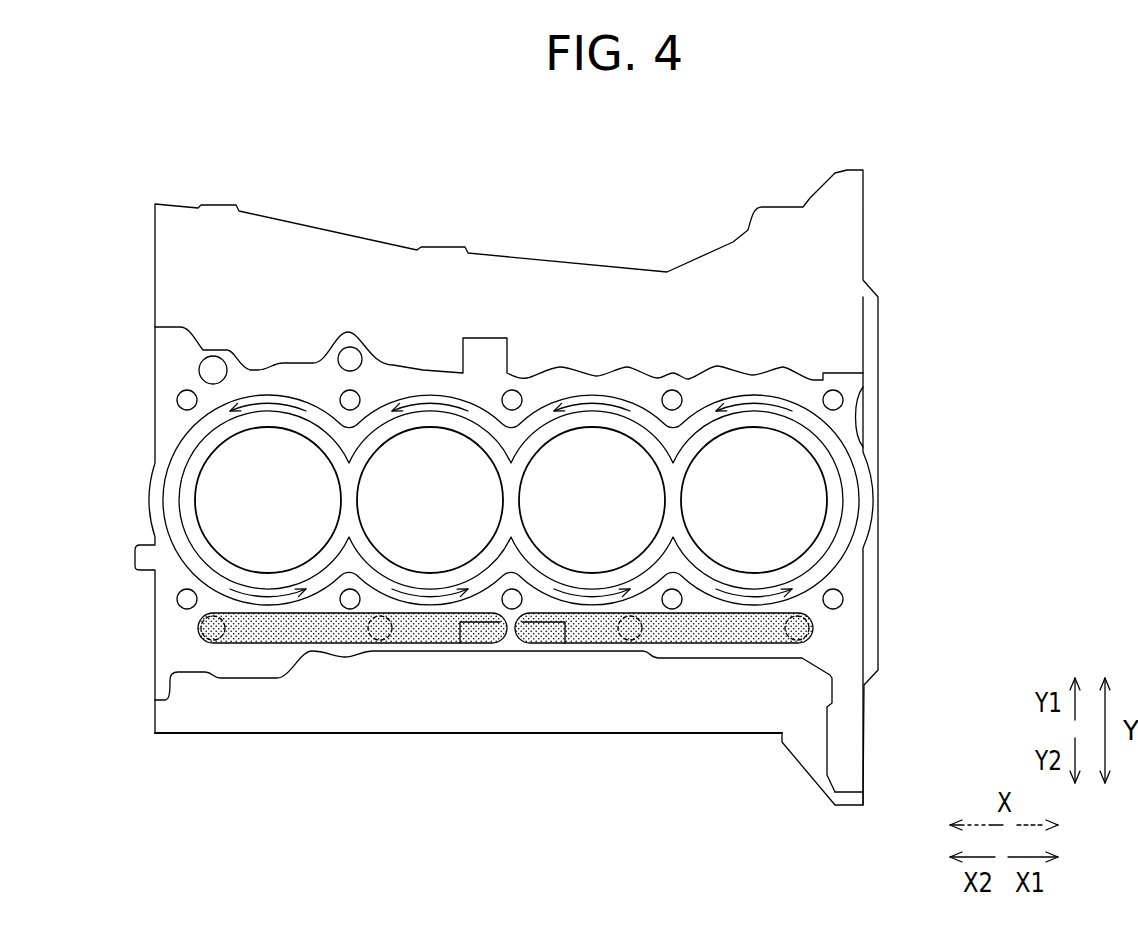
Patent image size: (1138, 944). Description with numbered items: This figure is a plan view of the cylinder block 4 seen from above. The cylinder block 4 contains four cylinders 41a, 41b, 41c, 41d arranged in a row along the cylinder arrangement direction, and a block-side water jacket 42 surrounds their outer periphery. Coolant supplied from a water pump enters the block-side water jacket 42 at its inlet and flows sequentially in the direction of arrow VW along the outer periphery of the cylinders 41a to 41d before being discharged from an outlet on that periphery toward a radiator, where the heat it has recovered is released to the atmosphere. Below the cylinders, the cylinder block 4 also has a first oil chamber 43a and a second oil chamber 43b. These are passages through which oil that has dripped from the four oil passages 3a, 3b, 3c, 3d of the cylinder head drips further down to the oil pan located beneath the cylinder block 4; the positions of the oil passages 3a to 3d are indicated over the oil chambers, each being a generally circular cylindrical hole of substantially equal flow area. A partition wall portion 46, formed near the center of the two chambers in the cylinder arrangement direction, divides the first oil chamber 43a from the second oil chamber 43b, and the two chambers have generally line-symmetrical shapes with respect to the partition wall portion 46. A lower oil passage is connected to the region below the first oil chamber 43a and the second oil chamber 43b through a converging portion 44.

The cylinder block 4 is at (878, 315).
The cylinder 41a is at (750, 450).
The cylinder 41b is at (585, 465).
The cylinder 41c is at (425, 450).
The cylinder 41d is at (255, 445).
The block-side water jacket 42 is at (848, 498).
The coolant flow direction arrow VW is at (262, 593).
The first oil chamber 43a is at (733, 642).
The second oil chamber 43b is at (263, 633).
The converging portion 44 is at (480, 633).
The partition wall portion 46 is at (512, 633).
The oil passage 3a is at (812, 637).
The oil passage 3b is at (650, 657).
The oil passage 3c is at (362, 648).
The oil passage 3d is at (197, 632).